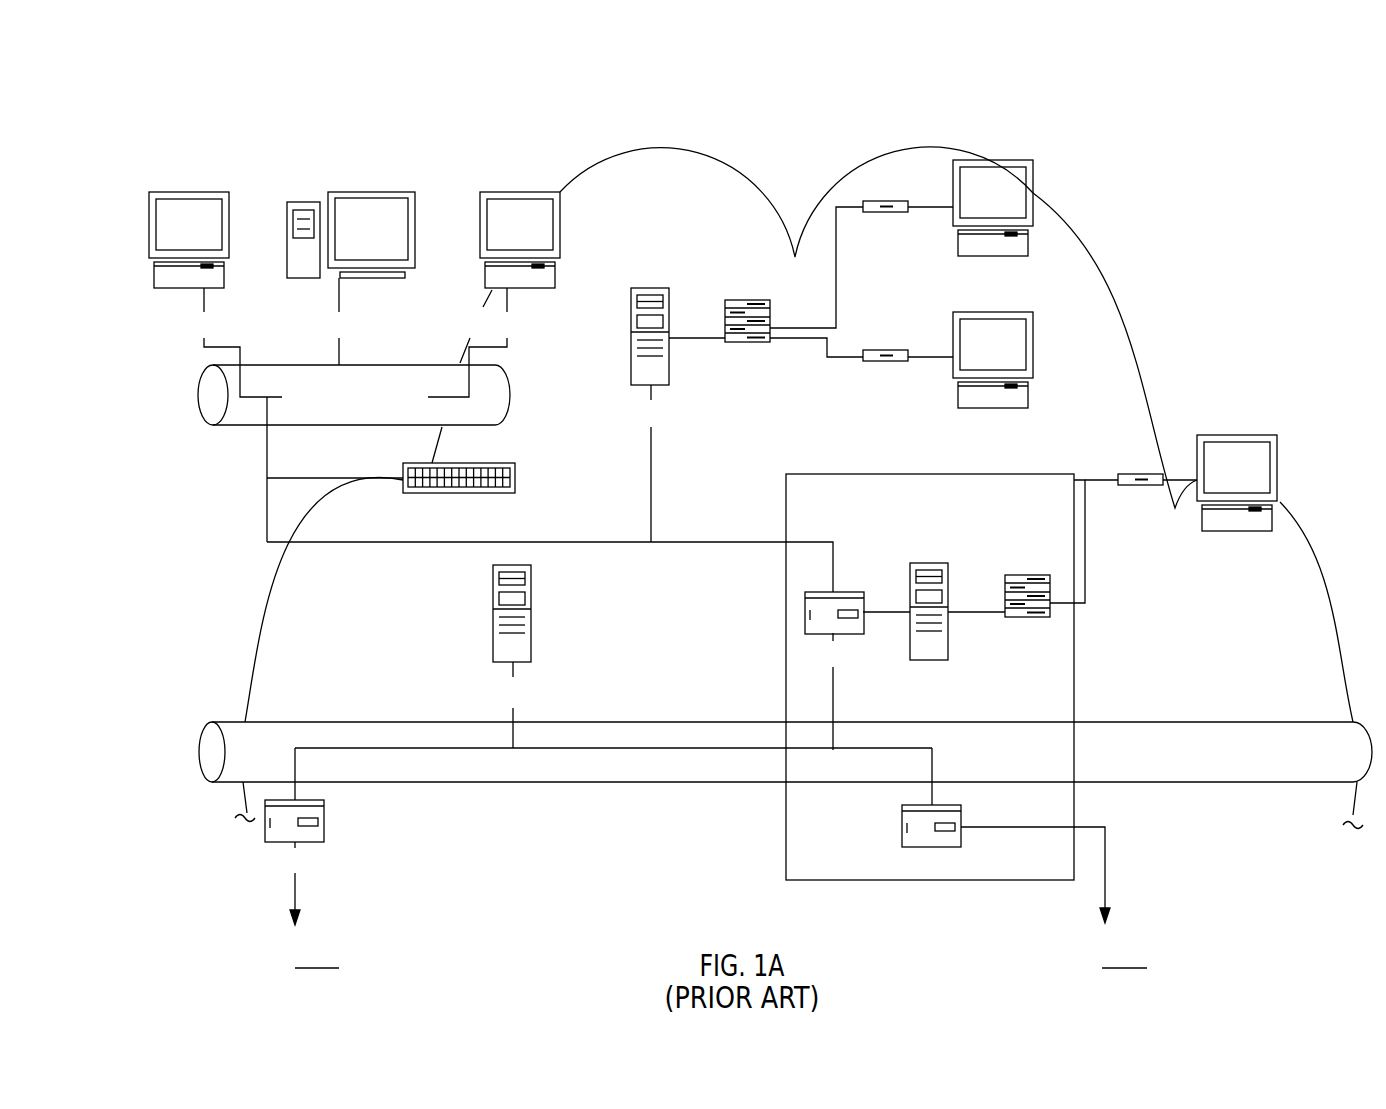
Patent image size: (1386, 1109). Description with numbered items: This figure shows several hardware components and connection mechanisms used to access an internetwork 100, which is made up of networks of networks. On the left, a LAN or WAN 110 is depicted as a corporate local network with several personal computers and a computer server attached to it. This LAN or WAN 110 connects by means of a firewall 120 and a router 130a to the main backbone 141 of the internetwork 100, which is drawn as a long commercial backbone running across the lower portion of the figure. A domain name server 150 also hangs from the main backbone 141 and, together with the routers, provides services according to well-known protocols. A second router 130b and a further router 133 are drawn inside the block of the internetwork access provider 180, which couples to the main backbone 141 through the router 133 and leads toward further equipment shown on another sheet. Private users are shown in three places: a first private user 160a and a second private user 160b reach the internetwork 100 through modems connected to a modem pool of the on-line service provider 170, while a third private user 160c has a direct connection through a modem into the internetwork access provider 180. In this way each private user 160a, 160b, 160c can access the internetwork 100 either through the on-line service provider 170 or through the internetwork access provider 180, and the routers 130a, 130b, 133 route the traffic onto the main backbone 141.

The internetwork 100 is at (1172, 204).
The LAN or WAN 110 is at (186, 168).
The firewall 120 is at (515, 477).
The router 130a is at (324, 812).
The router 130b is at (805, 603).
The router 133 is at (902, 817).
The main backbone 141 is at (308, 722).
The domain name server 150 is at (493, 598).
The private user 160a is at (1033, 193).
The private user 160b is at (1033, 337).
The private user 160c is at (1255, 435).
The on-line service provider 170 is at (828, 473).
The internetwork access provider 180 is at (663, 287).